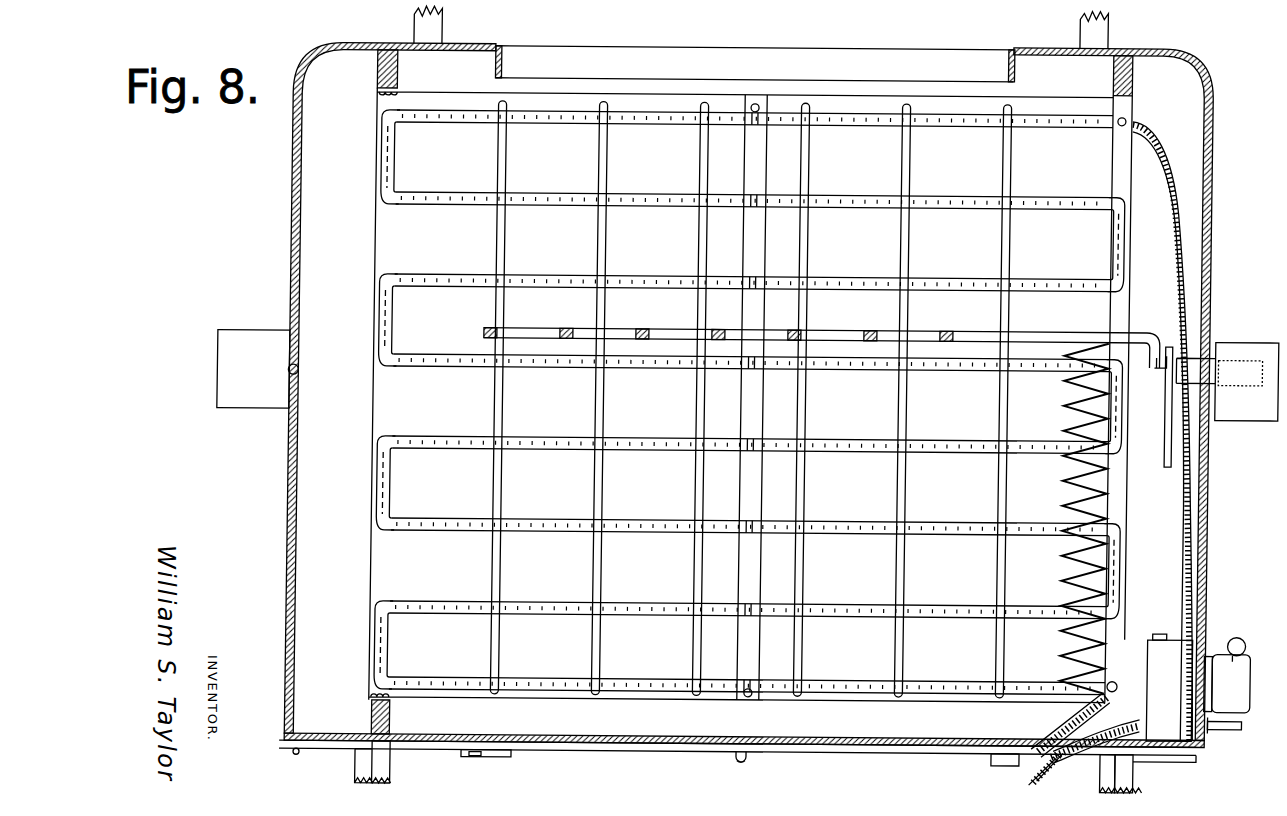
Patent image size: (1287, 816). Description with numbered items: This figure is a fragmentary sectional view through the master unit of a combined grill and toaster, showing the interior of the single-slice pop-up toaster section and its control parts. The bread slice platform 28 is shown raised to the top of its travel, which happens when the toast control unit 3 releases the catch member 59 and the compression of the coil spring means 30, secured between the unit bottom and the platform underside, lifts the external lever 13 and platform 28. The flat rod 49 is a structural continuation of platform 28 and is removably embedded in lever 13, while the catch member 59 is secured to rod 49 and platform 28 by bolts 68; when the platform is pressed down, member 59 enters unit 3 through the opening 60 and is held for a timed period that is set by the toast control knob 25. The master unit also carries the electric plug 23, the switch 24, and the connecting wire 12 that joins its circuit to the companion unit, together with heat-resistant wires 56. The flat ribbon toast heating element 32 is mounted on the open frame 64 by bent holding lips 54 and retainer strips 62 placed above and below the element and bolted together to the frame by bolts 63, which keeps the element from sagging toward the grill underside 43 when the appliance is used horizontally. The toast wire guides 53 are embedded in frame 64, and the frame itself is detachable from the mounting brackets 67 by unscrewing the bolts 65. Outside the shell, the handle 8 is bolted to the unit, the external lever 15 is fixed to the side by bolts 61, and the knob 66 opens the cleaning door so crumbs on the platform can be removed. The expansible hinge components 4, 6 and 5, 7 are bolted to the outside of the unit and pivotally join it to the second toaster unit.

The toast control unit 3 is at (1176, 656).
The expansible hinge 4 is at (1108, 776).
The expansible hinge 5 is at (396, 764).
The expansible hinge 6 is at (1140, 765).
The expansible hinge 7 is at (364, 768).
The handle 8 is at (1083, 30).
The connecting wire 12 is at (1024, 760).
The external lever 13 is at (1252, 406).
The external lever 15 is at (262, 410).
The electric plug 23 is at (1240, 726).
The switch 24 is at (1242, 630).
The toast control knob 25 is at (1252, 686).
The bread slice platform 28 is at (545, 326).
The spring means 30 is at (1073, 492).
The toast heating element 32 is at (1063, 122).
The grill underside 43 is at (335, 214).
The flat rod 49 is at (1246, 360).
The toast wire guide 53 is at (694, 477).
The bent holding lip 54 is at (390, 160).
The wires 56 is at (1186, 532).
The catch member 59 is at (1168, 428).
The opening 60 is at (1168, 626).
The bolt 61 is at (302, 364).
The retainer strip 62 is at (756, 255).
The bolt 63 is at (751, 104).
The open frame 64 is at (452, 98).
The bolt 65 is at (378, 93).
The knob 66 is at (760, 755).
The mounting bracket 67 is at (377, 68).
The bolt 68 is at (1158, 358).